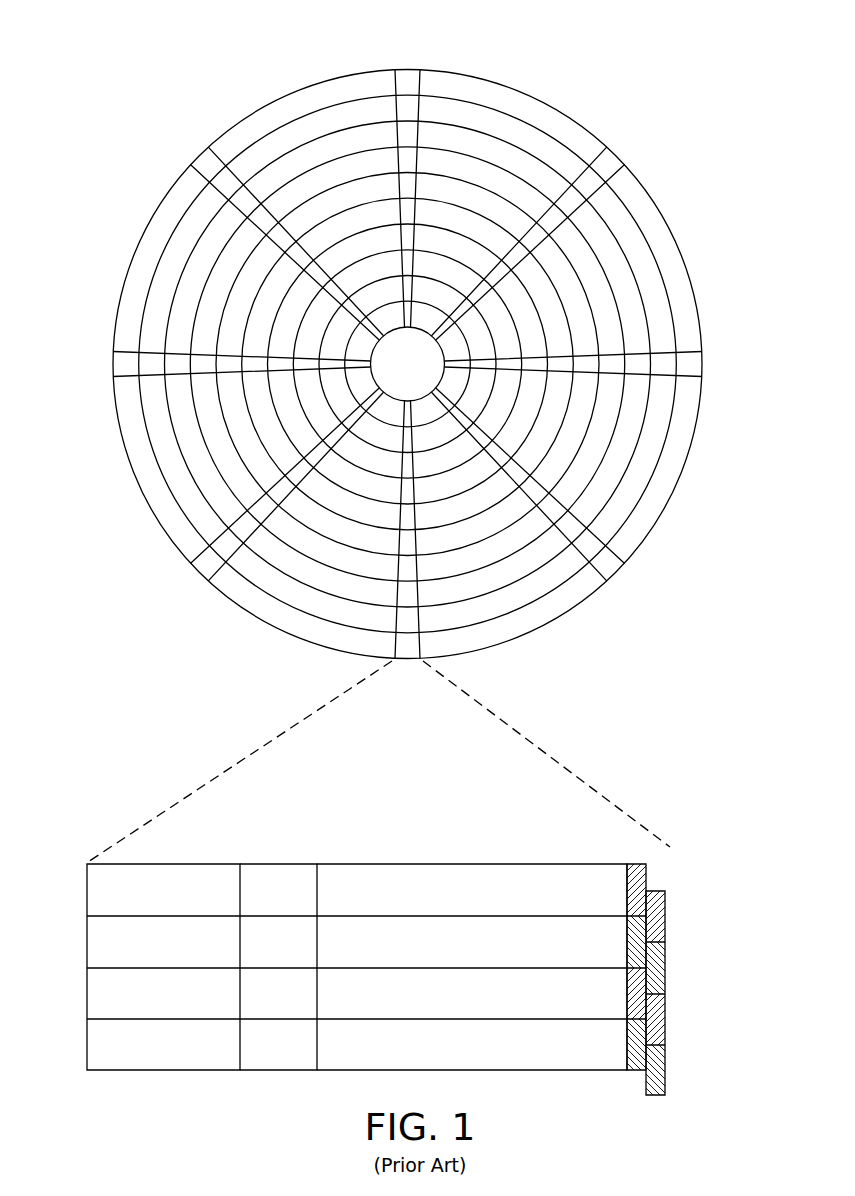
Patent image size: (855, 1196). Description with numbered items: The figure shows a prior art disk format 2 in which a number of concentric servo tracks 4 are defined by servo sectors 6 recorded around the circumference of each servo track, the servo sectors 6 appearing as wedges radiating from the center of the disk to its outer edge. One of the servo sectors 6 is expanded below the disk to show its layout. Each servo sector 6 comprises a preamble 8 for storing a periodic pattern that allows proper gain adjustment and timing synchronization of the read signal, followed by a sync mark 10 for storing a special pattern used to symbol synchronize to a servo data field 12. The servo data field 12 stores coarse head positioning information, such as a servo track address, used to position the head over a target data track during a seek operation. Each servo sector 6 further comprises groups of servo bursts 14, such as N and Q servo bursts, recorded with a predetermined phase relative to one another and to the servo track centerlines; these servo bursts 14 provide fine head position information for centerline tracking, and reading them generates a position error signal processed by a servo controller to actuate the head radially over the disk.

The disk format 2 is at (408, 375).
The servo track 4 is at (507, 128).
The servo sector 6 is at (276, 728).
The preamble 8 is at (170, 863).
The sync mark 10 is at (282, 863).
The servo data field 12 is at (461, 863).
The servo bursts 14 is at (666, 858).